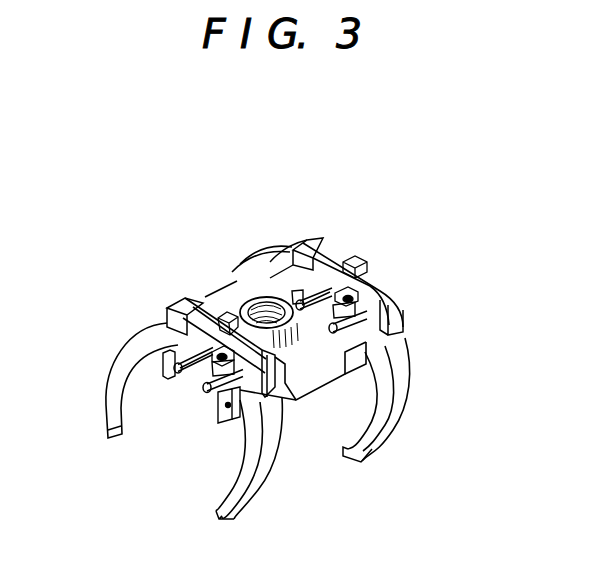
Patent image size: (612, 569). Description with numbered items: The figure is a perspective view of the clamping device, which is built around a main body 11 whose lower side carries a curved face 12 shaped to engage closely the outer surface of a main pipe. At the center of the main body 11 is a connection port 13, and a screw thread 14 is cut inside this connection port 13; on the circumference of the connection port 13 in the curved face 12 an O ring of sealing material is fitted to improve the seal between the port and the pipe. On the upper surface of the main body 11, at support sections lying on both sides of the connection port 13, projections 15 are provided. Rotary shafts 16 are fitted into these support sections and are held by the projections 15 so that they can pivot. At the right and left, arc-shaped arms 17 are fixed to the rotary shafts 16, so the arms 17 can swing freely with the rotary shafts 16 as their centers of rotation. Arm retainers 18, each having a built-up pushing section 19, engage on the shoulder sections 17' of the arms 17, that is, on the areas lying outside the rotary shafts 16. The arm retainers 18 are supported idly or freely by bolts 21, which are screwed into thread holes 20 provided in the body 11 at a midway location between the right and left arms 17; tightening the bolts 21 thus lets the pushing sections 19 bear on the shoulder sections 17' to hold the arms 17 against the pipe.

The main body 11 is at (302, 380).
The curved face 12 is at (172, 372).
The connection port 13 is at (248, 298).
The screw thread 14 is at (282, 300).
The projections 15 is at (170, 345).
The rotary shafts 16 is at (350, 296).
The arc-shaped arms 17 is at (256, 368).
The shoulder sections 17' is at (289, 356).
The arm retainers 18 is at (403, 300).
The pushing sections 19 is at (178, 352).
The thread holes 20 is at (205, 335).
The bolts 21 is at (227, 312).